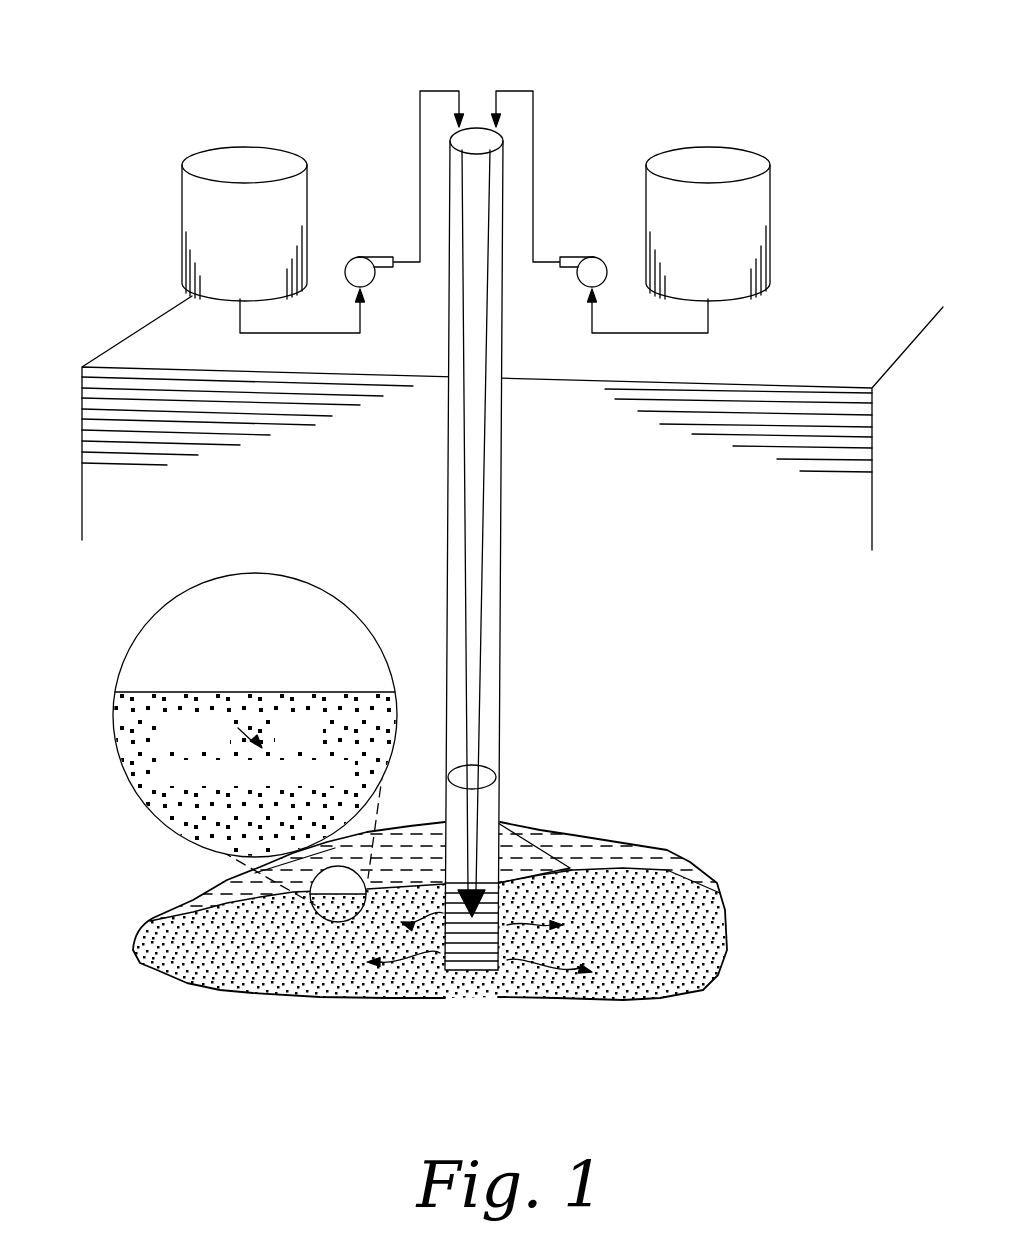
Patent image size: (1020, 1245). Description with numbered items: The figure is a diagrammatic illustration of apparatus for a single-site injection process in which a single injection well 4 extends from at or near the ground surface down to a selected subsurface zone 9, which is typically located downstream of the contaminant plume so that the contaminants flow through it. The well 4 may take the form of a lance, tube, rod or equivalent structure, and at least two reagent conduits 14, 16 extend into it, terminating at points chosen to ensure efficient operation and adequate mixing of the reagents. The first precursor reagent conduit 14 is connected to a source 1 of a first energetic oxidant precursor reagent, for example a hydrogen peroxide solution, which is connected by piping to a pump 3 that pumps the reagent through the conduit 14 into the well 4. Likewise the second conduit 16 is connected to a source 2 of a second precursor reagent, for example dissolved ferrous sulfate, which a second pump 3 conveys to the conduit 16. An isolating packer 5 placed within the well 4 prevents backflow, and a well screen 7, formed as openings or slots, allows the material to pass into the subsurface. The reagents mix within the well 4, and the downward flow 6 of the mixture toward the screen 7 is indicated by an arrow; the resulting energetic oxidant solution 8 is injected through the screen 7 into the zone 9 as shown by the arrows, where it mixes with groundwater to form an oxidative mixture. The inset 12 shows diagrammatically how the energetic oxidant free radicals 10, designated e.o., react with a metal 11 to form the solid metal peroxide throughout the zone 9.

The source of first energetic oxidant precursor reagent 1 is at (170, 226).
The source of second energetic oxidant precursor reagent 2 is at (784, 231).
The pump 3 is at (349, 238).
The injection well 4 is at (512, 600).
The isolating packer 5 is at (514, 777).
The injection flow arrow 6 is at (486, 881).
The well screen 7 is at (471, 985).
The energetic oxidant solution 8 is at (479, 942).
The subsurface zone 9 is at (738, 944).
The energetic oxidant free radicals 10 is at (409, 726).
The metal 11 is at (112, 686).
The inset 12 is at (115, 770).
The precursor reagent conduit 14 is at (455, 435).
The precursor reagent conduit 16 is at (486, 512).